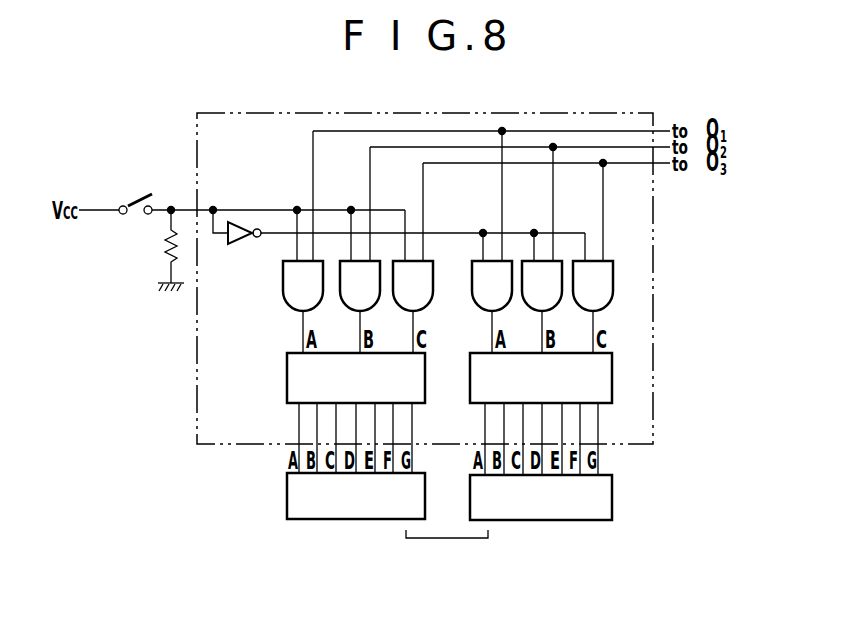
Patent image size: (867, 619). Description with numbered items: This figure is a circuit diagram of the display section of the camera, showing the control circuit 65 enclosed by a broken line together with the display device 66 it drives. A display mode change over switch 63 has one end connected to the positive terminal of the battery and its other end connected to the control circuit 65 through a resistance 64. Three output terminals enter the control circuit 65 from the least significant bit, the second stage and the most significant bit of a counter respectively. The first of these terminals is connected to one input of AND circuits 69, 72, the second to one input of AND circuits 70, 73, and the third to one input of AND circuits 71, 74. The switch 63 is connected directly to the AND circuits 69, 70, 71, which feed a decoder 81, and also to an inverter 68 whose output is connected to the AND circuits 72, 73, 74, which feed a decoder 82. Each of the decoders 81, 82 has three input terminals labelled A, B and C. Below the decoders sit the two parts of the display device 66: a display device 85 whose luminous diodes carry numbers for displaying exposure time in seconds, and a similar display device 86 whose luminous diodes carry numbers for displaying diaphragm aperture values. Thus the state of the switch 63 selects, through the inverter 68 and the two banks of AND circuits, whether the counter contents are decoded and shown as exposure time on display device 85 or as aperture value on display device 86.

The display mode change over switch 63 is at (146, 194).
The resistance 64 is at (166, 246).
The control circuit 65 is at (556, 113).
The display device 66 is at (461, 570).
The inverter 68 is at (233, 246).
The AND circuit 69 is at (303, 307).
The AND circuit 70 is at (360, 307).
The AND circuit 71 is at (413, 307).
The AND circuit 72 is at (492, 307).
The AND circuit 73 is at (542, 307).
The AND circuit 74 is at (593, 307).
The decoder 81 is at (286, 382).
The decoder 82 is at (469, 383).
The display device 85 is at (286, 496).
The display device 86 is at (469, 498).